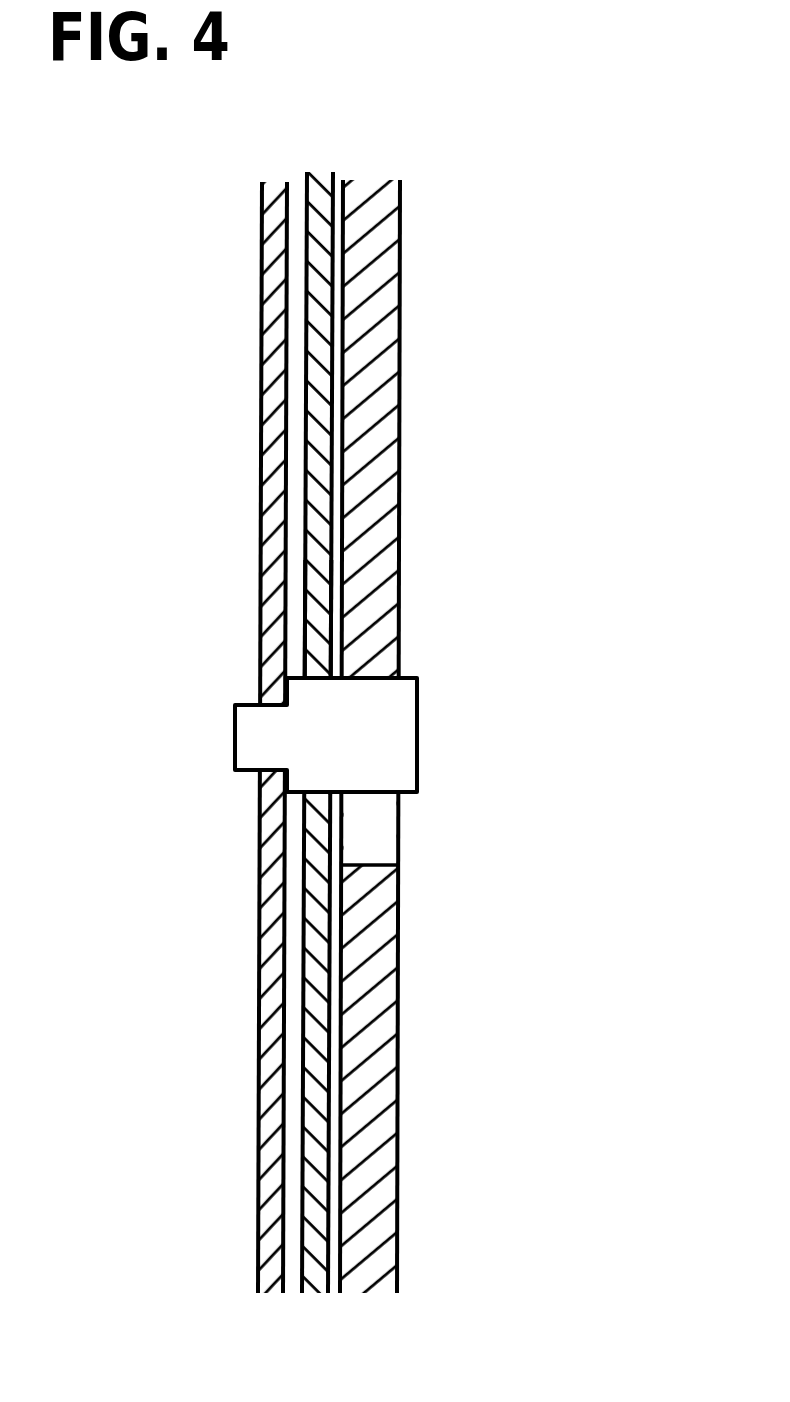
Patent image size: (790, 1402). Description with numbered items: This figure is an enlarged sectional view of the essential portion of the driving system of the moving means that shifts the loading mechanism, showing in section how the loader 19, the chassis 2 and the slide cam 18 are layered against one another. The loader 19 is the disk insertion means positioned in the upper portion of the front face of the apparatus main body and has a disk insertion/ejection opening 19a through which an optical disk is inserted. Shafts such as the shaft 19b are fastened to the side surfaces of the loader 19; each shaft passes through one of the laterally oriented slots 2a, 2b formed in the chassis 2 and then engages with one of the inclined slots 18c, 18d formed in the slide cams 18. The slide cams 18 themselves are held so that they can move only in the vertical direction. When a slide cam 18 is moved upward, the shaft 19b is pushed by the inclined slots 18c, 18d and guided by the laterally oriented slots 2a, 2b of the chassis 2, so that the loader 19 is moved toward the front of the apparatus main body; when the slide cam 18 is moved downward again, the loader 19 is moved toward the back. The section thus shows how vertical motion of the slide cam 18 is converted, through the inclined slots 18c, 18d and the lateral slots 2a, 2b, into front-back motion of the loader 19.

The chassis 2 is at (340, 345).
The laterally oriented slot 2a is at (444, 619).
The laterally oriented slot 2b is at (345, 658).
The slide cam 18 is at (498, 736).
The inclined slot 18c is at (498, 840).
The inclined slot 18d is at (380, 832).
The loader 19 is at (262, 297).
The disk insertion/ejection opening 19a is at (461, 735).
The shaft 19b is at (417, 733).